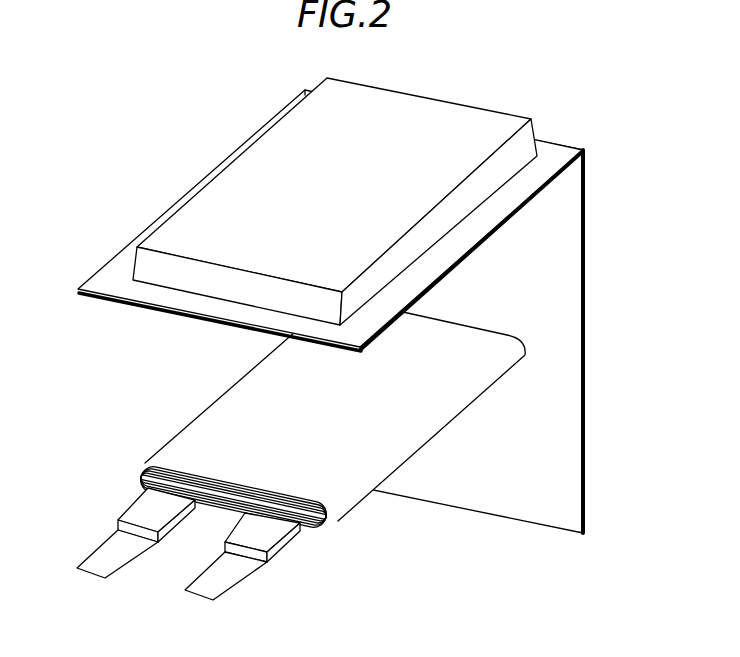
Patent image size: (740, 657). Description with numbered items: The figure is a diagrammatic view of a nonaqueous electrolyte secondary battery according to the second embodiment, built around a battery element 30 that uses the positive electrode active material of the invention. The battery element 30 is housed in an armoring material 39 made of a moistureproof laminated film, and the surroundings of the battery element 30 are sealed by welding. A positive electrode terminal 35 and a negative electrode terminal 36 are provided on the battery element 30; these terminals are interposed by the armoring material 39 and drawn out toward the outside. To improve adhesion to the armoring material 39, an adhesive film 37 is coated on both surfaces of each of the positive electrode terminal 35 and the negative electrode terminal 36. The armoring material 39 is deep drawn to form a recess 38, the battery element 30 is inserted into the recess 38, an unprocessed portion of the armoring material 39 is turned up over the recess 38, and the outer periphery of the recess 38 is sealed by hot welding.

The battery element 30 is at (141, 443).
The positive electrode terminal 35 is at (187, 589).
The negative electrode terminal 36 is at (78, 566).
The adhesive film 37 is at (122, 510).
The recess 38 is at (451, 126).
The armoring material 39 is at (586, 212).